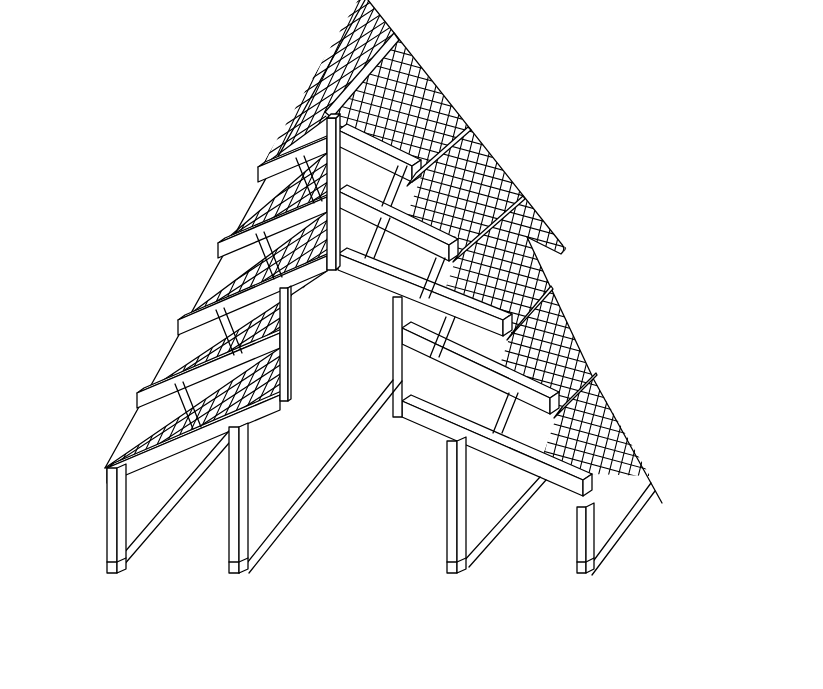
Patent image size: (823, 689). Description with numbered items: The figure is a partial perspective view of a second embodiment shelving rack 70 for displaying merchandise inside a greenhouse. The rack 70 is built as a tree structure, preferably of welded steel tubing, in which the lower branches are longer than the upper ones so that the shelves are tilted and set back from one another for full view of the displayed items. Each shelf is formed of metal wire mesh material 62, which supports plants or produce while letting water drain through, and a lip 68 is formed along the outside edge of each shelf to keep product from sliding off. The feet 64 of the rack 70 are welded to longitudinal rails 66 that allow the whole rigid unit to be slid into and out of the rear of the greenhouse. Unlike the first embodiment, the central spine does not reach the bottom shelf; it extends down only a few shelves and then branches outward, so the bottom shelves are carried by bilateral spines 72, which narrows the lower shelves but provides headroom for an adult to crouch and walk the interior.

The wire mesh material 62 is at (598, 398).
The feet 64 is at (107, 505).
The longitudinal rails 66 is at (153, 538).
The lip 68 is at (632, 452).
The second embodiment shelving rack 70 is at (113, 88).
The bilateral spines 72 is at (398, 358).